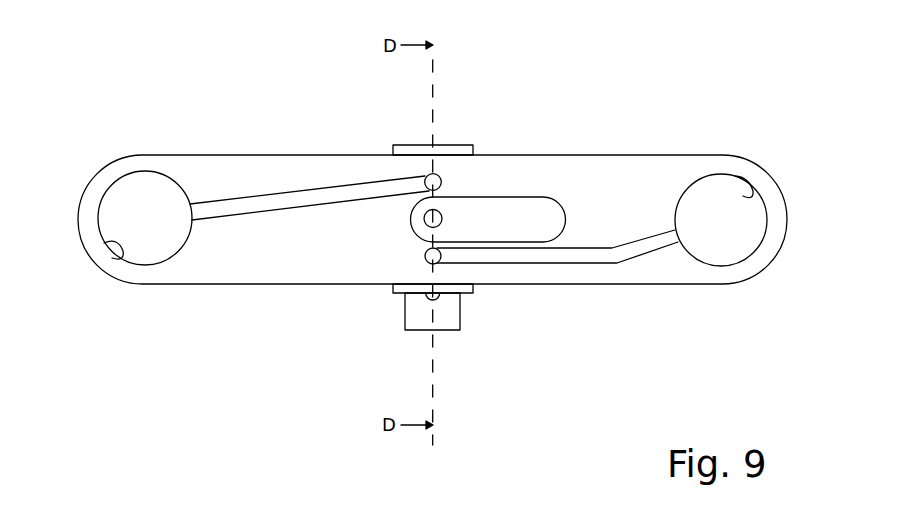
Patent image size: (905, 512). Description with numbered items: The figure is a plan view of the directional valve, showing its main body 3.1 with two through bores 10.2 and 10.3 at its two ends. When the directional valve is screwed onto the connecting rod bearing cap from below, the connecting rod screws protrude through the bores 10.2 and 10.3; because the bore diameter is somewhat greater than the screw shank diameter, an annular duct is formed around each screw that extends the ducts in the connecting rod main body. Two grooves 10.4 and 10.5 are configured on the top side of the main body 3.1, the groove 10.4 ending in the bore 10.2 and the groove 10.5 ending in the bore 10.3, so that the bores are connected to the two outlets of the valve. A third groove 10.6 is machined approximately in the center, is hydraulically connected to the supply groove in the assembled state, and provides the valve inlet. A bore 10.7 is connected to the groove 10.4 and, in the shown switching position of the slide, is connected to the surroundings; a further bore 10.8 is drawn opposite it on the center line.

The main body 3.1 is at (283, 263).
The through bore 10.2 is at (112, 240).
The through bore 10.3 is at (735, 176).
The groove 10.4 is at (303, 193).
The groove 10.5 is at (645, 253).
The third groove 10.6 is at (537, 213).
The bore 10.7 is at (440, 177).
The lower pivot bore 10.8 is at (428, 262).